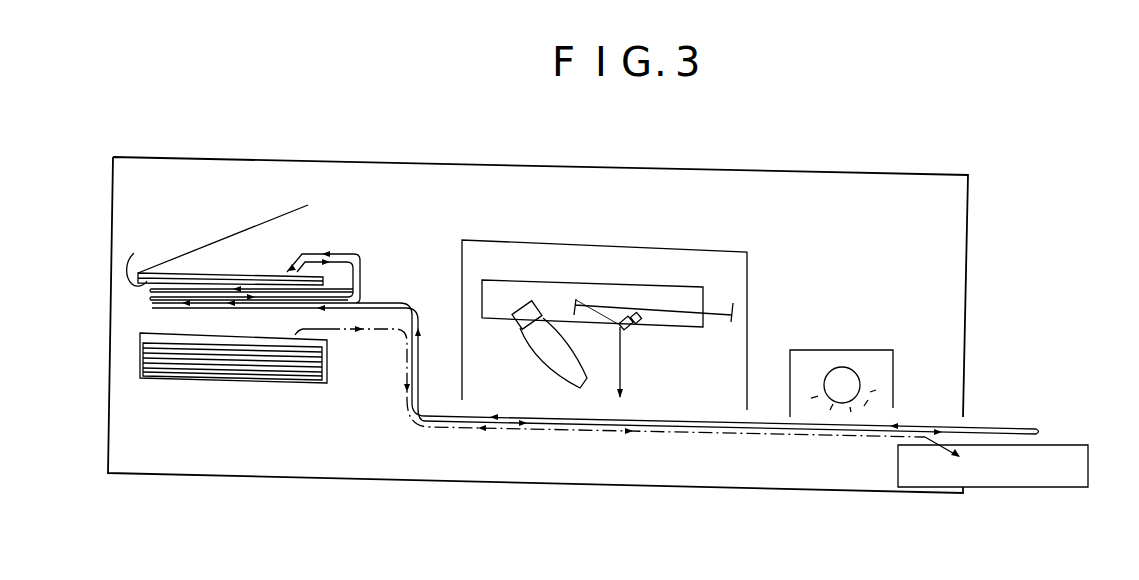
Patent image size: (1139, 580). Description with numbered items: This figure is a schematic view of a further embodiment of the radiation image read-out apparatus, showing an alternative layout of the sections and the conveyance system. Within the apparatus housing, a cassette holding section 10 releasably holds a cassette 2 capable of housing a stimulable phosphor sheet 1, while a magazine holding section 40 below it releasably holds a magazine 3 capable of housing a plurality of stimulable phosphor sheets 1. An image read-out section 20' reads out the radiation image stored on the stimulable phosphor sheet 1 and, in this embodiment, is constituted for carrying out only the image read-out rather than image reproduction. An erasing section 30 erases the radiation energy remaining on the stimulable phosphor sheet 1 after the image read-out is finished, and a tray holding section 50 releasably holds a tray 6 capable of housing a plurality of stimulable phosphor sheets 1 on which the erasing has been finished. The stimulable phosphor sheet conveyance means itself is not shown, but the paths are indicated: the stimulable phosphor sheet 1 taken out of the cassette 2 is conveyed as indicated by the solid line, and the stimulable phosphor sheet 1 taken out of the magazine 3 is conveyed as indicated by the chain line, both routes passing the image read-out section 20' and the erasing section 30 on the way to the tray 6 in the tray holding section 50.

The stimulable phosphor sheet 1 is at (247, 276).
The cassette 2 is at (137, 256).
The magazine 3 is at (140, 357).
The tray 6 is at (1016, 488).
The cassette holding section 10 is at (233, 222).
The image read-out section 20' is at (604, 298).
The erasing section 30 is at (854, 345).
The magazine holding section 40 is at (189, 340).
The tray holding section 50 is at (1010, 445).